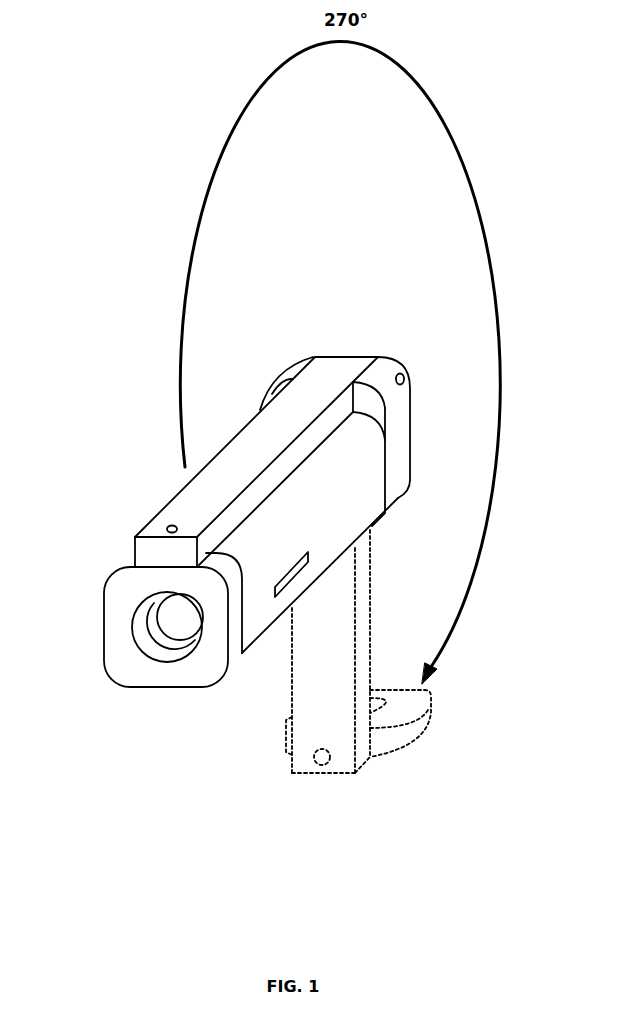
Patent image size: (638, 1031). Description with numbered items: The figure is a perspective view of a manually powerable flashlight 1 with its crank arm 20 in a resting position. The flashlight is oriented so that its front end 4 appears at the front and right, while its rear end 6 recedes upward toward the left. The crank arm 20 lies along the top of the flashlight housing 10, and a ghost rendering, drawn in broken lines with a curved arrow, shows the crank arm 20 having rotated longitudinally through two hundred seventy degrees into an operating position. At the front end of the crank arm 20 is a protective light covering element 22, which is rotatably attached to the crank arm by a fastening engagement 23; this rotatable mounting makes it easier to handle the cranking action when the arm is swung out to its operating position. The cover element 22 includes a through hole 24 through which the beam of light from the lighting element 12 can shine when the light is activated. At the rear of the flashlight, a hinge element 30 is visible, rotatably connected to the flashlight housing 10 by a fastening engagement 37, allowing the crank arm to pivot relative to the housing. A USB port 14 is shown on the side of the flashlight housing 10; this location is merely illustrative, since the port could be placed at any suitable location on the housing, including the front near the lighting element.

The manually powerable flashlight 1 is at (150, 409).
The front end 4 is at (98, 704).
The rear end 6 is at (358, 332).
The flashlight housing 10 is at (338, 518).
The lighting element 12 is at (179, 618).
The USB port 14 is at (288, 582).
The crank arm 20 is at (185, 502).
The protective light covering element 22 is at (115, 647).
The fastening engagement 23 is at (168, 526).
The through hole 24 is at (138, 623).
The hinge element 30 is at (404, 376).
The fastening engagement 37 is at (400, 433).